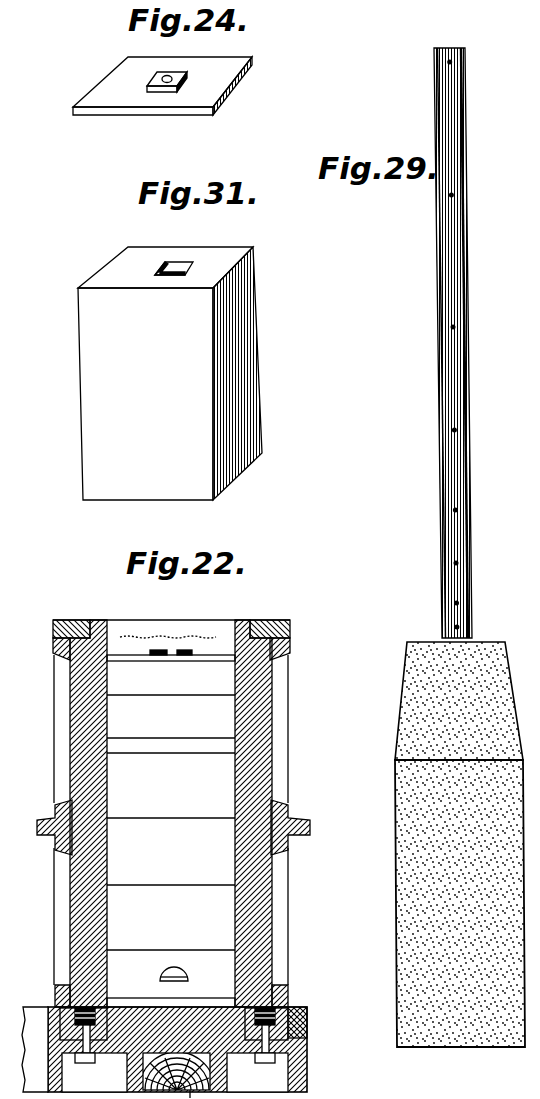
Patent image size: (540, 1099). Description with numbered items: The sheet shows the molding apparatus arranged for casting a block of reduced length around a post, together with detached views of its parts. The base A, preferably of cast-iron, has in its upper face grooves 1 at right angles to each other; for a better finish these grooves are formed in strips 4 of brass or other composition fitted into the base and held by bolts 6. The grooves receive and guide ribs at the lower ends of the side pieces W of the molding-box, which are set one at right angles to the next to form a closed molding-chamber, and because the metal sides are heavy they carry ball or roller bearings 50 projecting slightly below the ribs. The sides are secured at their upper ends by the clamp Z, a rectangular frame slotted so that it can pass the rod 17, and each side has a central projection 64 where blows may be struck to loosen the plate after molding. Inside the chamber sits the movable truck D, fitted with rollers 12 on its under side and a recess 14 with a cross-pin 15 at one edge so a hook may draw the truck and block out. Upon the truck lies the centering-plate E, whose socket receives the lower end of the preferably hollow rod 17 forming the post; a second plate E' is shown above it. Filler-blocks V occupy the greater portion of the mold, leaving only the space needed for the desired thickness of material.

In FIG. 24, the centering-plate E is at (172, 86).
In FIG. 29, the rod 17 is at (469, 383).
In FIG. 22, the clamp Z is at (53, 622).
In FIG. 22, the side pieces W is at (54, 736).
In FIG. 22, the projection 64 is at (320, 812).
In FIG. 22, the inner cover plate E' is at (171, 663).
In FIG. 22, the filler-blocks V is at (171, 822).
In FIG. 22, the truck D is at (190, 974).
In FIG. 22, the recess 14 is at (163, 975).
In FIG. 22, the cross-pin 15 is at (182, 970).
In FIG. 22, the rollers 12 is at (132, 999).
In FIG. 22, the base A is at (193, 1049).
In FIG. 22, the strips 4 is at (48, 1042).
In FIG. 22, the bolts 6 is at (175, 1072).
In FIG. 22, the ball or roller bearings 50 is at (288, 1028).
In FIG. 22, the grooves 1 is at (60, 1008).